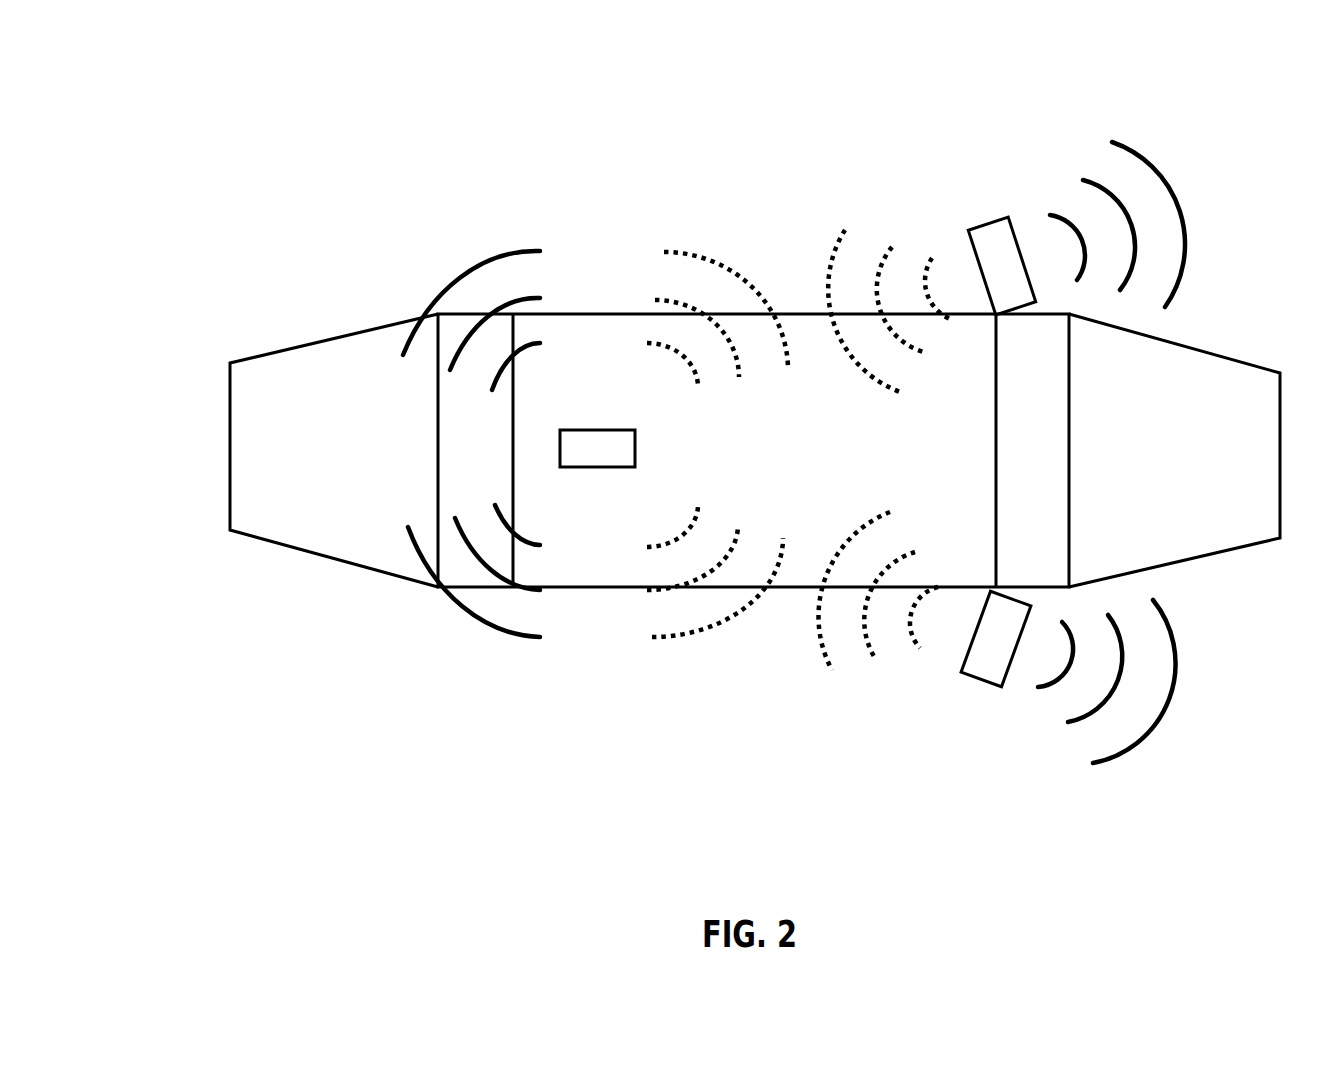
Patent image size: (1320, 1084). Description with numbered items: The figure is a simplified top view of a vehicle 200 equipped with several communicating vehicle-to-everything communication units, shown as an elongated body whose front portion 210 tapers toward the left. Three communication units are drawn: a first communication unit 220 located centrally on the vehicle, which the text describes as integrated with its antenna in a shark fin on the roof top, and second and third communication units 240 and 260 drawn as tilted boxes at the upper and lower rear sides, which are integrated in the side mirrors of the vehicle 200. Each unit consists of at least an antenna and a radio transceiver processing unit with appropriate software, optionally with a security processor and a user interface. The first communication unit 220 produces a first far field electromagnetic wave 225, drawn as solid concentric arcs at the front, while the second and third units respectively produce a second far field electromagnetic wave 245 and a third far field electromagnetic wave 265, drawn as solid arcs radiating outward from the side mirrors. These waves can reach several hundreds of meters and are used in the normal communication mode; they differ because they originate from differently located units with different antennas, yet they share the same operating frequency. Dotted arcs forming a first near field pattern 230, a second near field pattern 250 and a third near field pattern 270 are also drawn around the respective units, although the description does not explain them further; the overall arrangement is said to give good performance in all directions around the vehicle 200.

The vehicle 200 is at (216, 148).
The vehicle body 210 is at (230, 456).
The first V2X communication unit U1 220 is at (578, 467).
The far field electromagnetic wave M1 225 is at (405, 337).
The first noise signal N1 230 is at (700, 252).
The second V2X communication unit U2 240 is at (988, 218).
The far field electromagnetic wave M2 245 is at (1157, 168).
The second noise signal N2 250 is at (845, 230).
The third V2X communication unit U3 260 is at (972, 678).
The far field electromagnetic wave M3 265 is at (1142, 742).
The third noise signal N3 270 is at (828, 659).